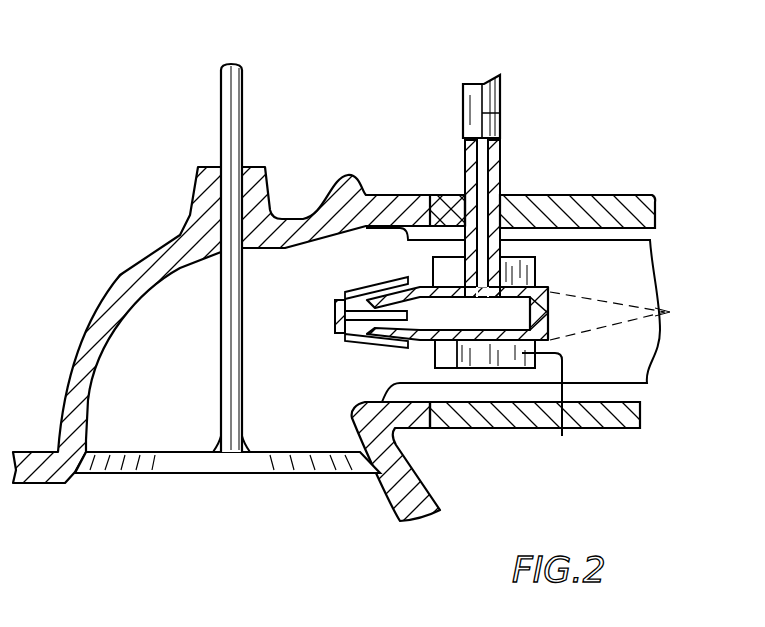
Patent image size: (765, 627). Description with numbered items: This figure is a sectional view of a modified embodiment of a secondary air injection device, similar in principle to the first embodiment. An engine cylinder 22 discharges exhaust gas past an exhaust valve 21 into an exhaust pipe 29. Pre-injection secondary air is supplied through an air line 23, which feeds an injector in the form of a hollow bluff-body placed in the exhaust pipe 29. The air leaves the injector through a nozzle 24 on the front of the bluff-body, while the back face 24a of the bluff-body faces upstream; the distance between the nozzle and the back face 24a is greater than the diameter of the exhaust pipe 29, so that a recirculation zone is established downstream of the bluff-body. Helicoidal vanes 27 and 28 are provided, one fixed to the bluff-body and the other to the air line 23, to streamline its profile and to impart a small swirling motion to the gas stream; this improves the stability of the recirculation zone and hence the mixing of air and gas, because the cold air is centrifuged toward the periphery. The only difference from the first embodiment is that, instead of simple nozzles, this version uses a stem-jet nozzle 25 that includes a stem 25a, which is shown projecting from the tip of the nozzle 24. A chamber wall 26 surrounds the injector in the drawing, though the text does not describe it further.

The exhaust valve 21 is at (232, 110).
The cylinder 22 is at (423, 500).
The air line 23 is at (498, 118).
The nozzle 24 is at (422, 346).
The back face of the bluff-body 24a is at (553, 310).
The stem-jet nozzle 25 is at (338, 312).
The stem 25a is at (378, 318).
The injector chamber wall 26 is at (630, 268).
The helicoidal vane 27 is at (552, 410).
The helicoidal vane 28 is at (520, 270).
The exhaust pipe 29 is at (617, 428).